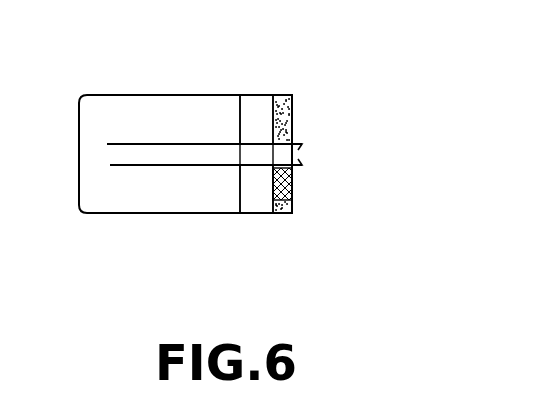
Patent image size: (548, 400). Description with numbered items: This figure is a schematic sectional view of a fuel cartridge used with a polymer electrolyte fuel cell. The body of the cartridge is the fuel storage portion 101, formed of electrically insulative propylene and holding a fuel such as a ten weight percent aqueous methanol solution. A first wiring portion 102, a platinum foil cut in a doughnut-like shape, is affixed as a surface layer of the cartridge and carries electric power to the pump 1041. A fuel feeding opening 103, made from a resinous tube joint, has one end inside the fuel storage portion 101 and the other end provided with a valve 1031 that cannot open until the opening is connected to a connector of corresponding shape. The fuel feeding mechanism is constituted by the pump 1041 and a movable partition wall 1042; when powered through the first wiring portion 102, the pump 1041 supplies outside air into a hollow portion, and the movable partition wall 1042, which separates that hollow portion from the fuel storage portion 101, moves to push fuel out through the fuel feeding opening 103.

The fuel storage portion 101 is at (150, 110).
The first wiring portion 102 is at (282, 95).
The fuel feeding opening 103 is at (310, 155).
The valve 1031 is at (302, 150).
The pump 1041 is at (292, 185).
The movable partition wall 1042 is at (238, 185).